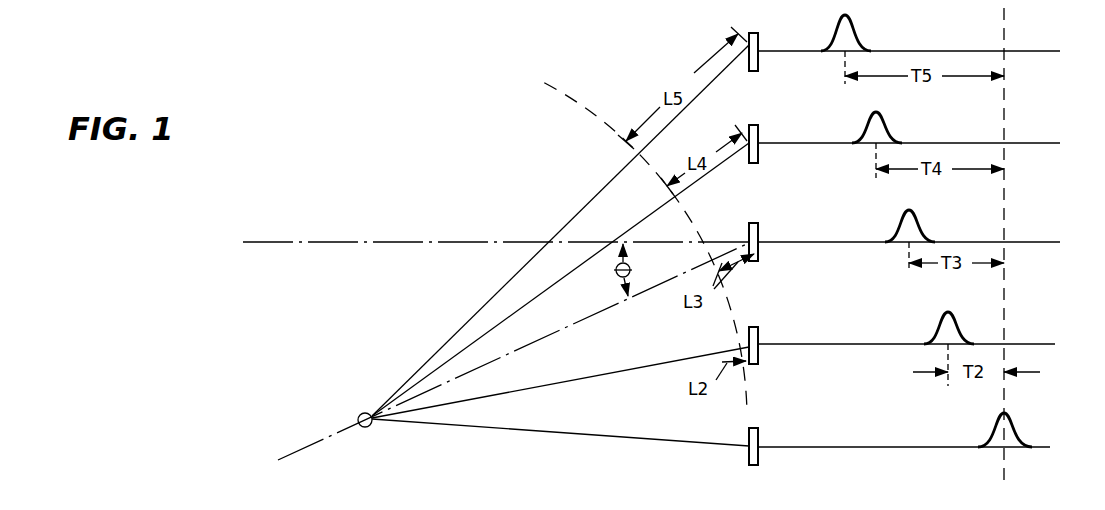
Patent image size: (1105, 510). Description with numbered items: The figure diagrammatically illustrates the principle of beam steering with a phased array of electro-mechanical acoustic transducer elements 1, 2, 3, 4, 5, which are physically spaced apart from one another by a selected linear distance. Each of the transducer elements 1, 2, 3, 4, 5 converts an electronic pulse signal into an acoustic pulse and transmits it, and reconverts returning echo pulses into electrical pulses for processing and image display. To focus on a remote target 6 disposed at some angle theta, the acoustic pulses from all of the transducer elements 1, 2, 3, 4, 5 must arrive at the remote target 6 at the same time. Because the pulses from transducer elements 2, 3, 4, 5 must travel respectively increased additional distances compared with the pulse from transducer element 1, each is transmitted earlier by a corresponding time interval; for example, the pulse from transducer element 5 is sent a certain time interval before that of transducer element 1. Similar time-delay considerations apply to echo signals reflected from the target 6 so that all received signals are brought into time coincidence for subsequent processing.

The electro-mechanical acoustic transducer element 1 is at (758, 455).
The electro-mechanical acoustic transducer element 2 is at (758, 352).
The electro-mechanical acoustic transducer element 3 is at (758, 248).
The electro-mechanical acoustic transducer element 4 is at (758, 150).
The electro-mechanical acoustic transducer element 5 is at (758, 58).
The remote target 6 is at (364, 428).